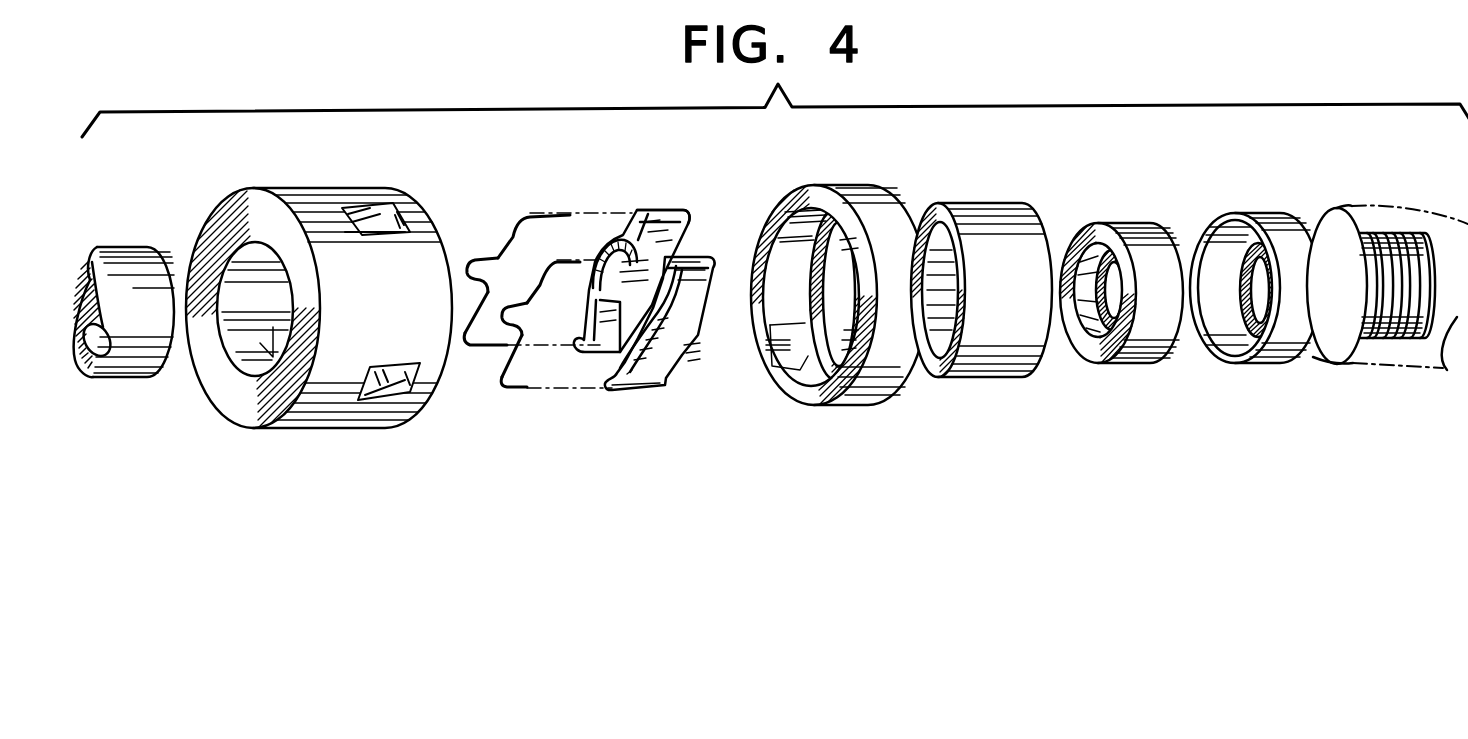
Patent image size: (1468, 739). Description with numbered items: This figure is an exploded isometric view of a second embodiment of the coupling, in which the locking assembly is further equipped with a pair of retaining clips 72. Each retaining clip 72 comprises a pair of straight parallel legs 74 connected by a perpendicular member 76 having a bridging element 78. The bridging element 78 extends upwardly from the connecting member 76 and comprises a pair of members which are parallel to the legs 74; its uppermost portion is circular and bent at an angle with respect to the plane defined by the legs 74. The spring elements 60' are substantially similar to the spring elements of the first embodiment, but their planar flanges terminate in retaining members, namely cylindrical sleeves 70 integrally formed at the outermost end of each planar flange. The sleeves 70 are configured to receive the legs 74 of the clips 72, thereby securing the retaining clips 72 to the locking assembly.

The spring element 60' is at (665, 294).
The cylindrical sleeve 70 is at (636, 212).
The retaining clip 72 is at (509, 306).
The leg 74 is at (488, 348).
The perpendicular member 76 is at (515, 262).
The bridging element 78 is at (470, 258).